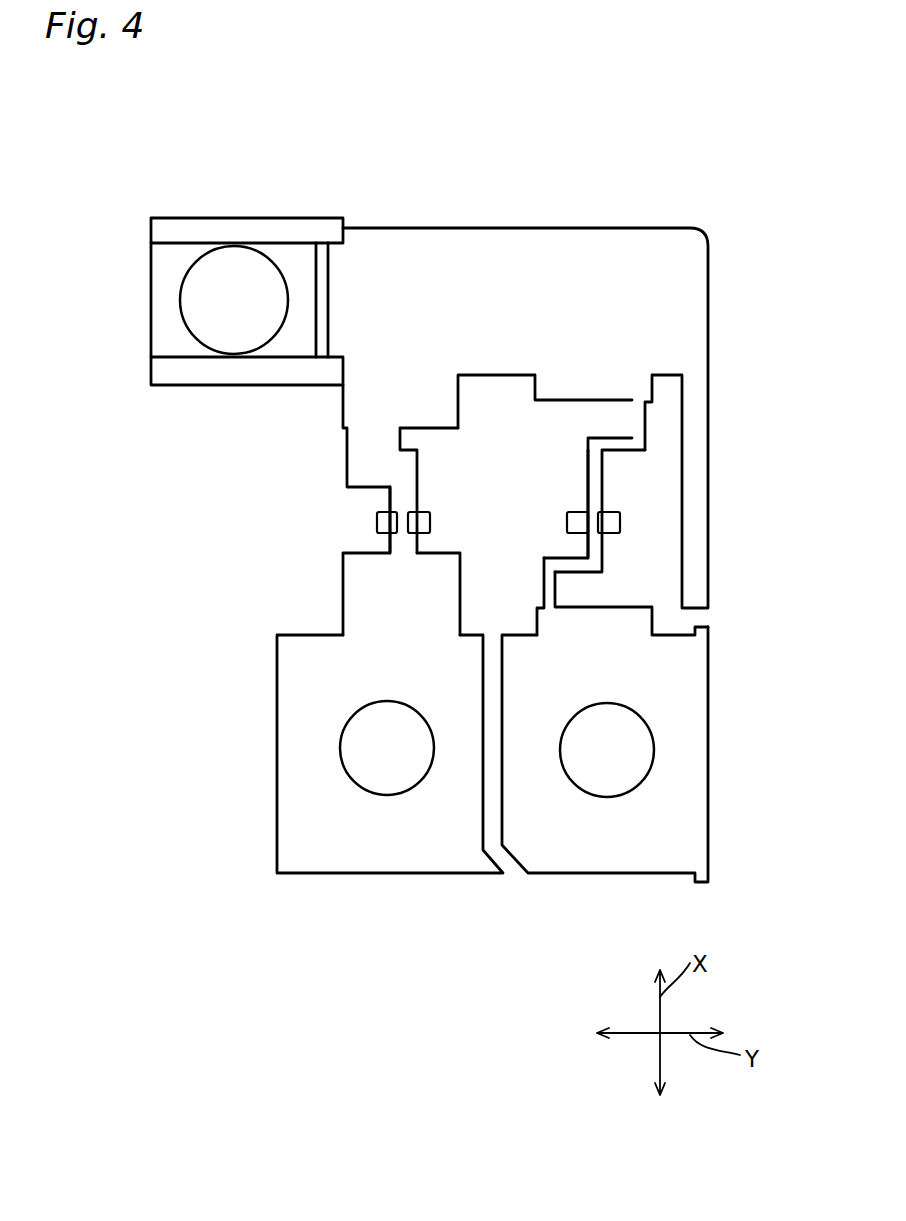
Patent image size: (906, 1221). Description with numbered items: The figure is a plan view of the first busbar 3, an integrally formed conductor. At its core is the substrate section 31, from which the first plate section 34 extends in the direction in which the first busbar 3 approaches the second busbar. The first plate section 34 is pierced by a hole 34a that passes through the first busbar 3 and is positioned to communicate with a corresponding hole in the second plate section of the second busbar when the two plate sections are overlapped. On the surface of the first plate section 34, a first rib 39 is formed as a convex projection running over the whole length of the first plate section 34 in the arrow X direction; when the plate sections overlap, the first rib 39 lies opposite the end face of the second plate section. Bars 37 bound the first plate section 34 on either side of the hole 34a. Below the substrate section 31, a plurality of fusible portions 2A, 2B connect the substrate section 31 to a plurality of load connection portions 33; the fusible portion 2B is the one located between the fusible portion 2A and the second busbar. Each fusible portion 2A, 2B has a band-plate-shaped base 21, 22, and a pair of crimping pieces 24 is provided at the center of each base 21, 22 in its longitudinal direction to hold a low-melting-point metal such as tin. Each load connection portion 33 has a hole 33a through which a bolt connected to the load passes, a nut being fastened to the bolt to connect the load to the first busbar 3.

The first busbar 3 is at (611, 162).
The substrate section 31 is at (500, 243).
The base 21 is at (595, 493).
The base 22 is at (403, 493).
The crimping pieces 24 is at (388, 523).
The fusible portion 2A is at (562, 518).
The fusible portion 2B is at (367, 518).
The load connection portions 33 is at (352, 848).
The hole 33a is at (376, 793).
The first plate section 34 is at (167, 272).
The hole 34a is at (203, 316).
The bracket bar 37 is at (250, 232).
The first rib 39 is at (325, 278).